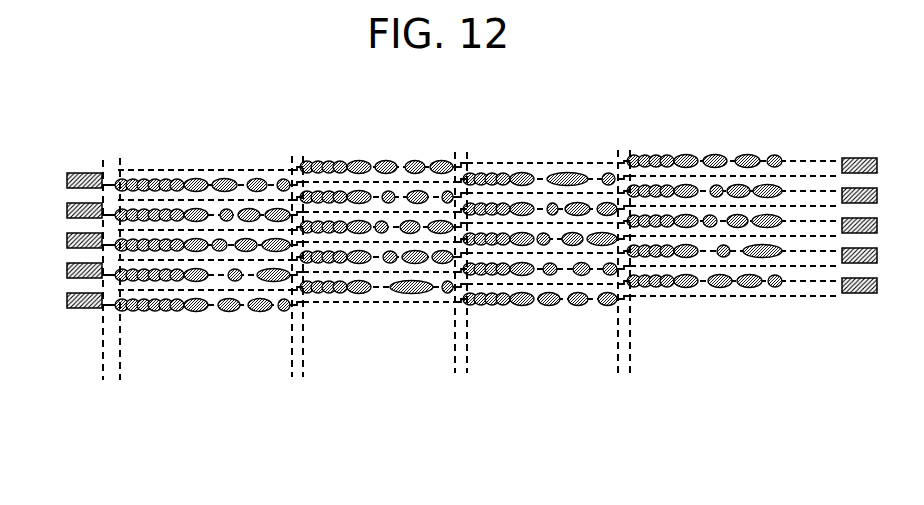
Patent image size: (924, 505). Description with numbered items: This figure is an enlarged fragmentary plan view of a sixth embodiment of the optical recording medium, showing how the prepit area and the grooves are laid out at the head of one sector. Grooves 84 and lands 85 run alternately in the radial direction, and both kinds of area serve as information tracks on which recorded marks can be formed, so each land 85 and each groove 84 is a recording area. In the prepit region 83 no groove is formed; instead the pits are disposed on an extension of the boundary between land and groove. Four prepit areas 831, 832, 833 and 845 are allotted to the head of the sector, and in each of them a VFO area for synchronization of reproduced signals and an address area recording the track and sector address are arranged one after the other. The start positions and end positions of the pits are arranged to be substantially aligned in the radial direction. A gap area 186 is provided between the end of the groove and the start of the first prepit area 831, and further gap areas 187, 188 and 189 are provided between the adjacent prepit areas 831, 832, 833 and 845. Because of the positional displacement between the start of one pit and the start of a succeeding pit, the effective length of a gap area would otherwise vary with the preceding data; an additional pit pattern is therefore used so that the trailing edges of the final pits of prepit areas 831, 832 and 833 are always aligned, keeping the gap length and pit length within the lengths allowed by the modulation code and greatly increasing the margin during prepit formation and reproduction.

The prepit region 83 is at (471, 320).
The groove 84 is at (85, 172).
The land 85 is at (72, 195).
The boundary line 186 is at (111, 289).
The boundary line 187 is at (294, 288).
The boundary line 188 is at (459, 286).
The boundary line 189 is at (623, 281).
The prepit area 831 is at (292, 349).
The prepit area 832 is at (455, 349).
The prepit area 833 is at (618, 345).
The fourth region 845 is at (733, 274).